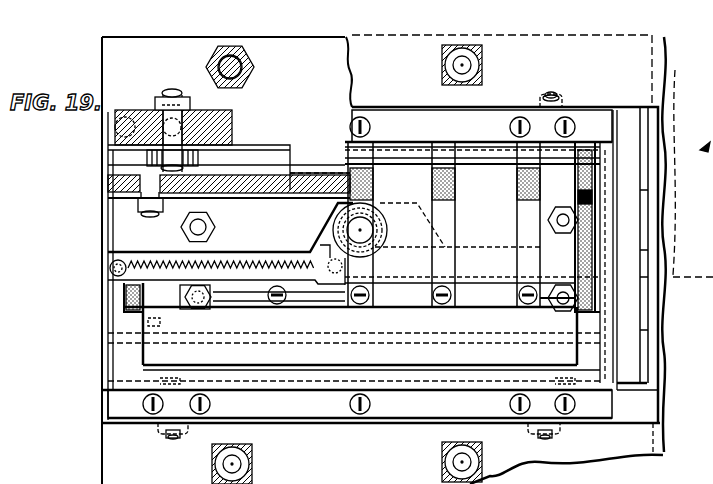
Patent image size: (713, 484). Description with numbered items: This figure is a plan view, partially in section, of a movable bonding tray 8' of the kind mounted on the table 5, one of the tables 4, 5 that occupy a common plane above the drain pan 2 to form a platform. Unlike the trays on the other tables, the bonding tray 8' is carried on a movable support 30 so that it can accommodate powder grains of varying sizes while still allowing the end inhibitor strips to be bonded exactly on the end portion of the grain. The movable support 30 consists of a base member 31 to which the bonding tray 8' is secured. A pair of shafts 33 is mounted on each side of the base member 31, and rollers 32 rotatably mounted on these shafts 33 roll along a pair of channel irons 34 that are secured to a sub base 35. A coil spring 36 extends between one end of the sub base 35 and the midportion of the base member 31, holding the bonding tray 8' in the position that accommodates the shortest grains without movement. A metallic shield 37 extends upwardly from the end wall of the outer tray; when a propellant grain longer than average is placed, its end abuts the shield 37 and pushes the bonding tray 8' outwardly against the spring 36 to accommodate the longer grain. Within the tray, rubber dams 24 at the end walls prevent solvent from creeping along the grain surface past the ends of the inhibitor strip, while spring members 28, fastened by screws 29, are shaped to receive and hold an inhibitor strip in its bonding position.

The drain pan 2 is at (693, 275).
The table 4 is at (684, 172).
The table 5 is at (656, 436).
The bonding tray 8' is at (77, 322).
The dams 24 is at (128, 296).
The spring members 28 is at (447, 283).
The screws 29 is at (440, 303).
The movable support 30 is at (350, 128).
The base member 31 is at (342, 420).
The rollers 32 is at (200, 158).
The shafts 33 is at (168, 122).
The channel irons 34 is at (113, 165).
The sub base 35 is at (640, 400).
The coil spring 36 is at (145, 262).
The metallic shield 37 is at (642, 366).